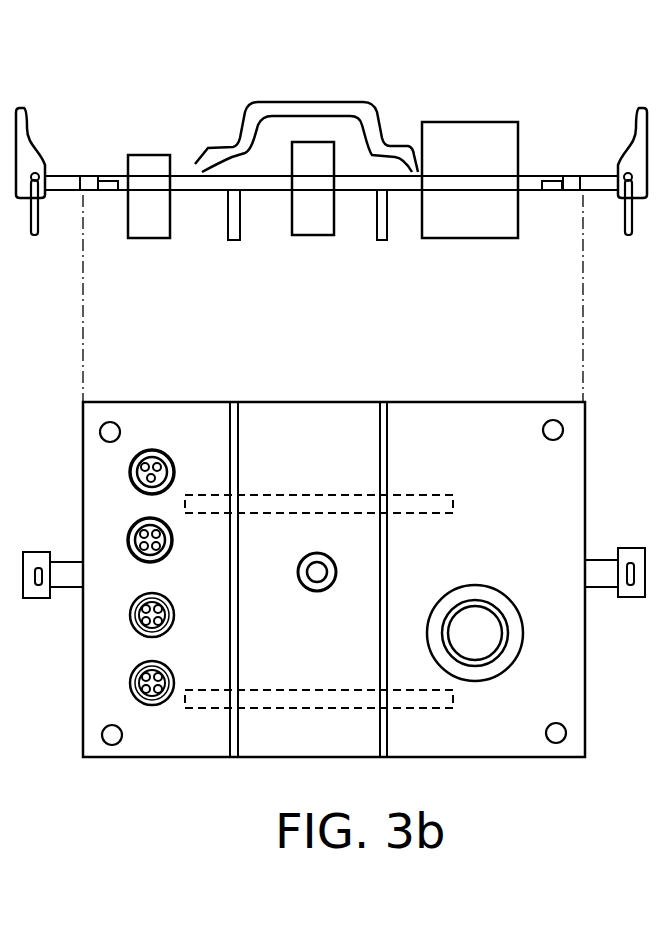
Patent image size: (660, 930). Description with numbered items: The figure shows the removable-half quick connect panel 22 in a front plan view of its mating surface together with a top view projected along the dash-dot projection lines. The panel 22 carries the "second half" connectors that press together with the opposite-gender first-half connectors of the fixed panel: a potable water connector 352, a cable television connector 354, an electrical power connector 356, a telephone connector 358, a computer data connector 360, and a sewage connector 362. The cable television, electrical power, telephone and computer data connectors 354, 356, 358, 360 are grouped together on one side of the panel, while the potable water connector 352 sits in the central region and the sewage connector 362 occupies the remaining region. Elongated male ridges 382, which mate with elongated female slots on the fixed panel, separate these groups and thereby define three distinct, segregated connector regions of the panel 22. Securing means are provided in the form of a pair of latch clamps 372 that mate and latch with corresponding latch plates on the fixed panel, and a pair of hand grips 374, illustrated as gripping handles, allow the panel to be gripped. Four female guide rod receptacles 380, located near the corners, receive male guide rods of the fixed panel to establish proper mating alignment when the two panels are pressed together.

The removable-half quick connect panel 22 is at (496, 511).
The potable water connector 352 is at (317, 553).
The cable television connector 354 is at (150, 212).
The electrical power connector 356 is at (130, 540).
The telephone connector 358 is at (137, 632).
The computer data connector 360 is at (133, 695).
The sewage connector 362 is at (475, 633).
The latch clamps 372 is at (633, 147).
The hand grips 374 is at (362, 690).
The female guide rod receptacles 380 is at (122, 733).
The elongated male ridges 382 is at (234, 212).